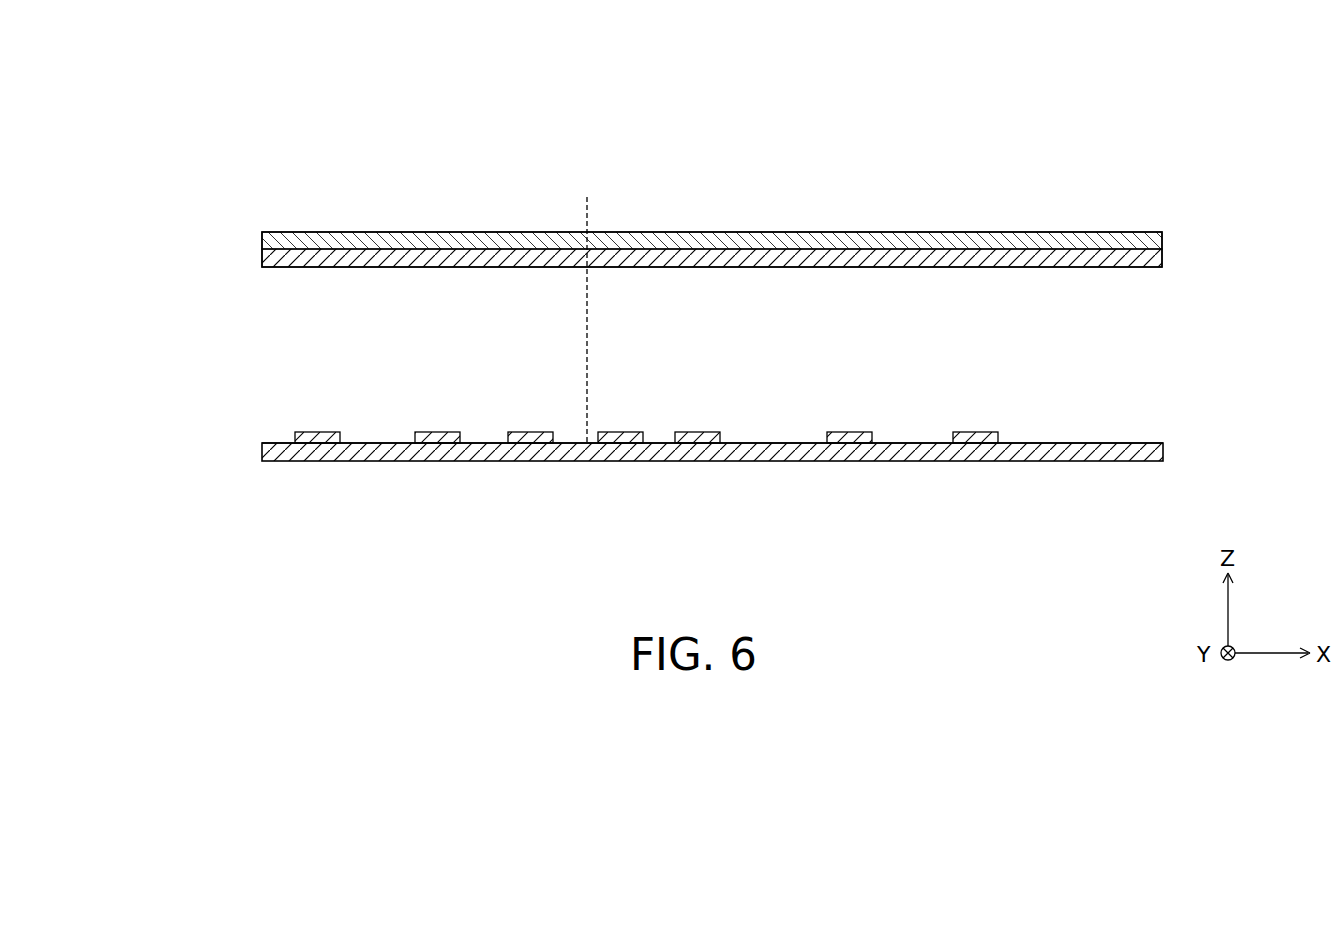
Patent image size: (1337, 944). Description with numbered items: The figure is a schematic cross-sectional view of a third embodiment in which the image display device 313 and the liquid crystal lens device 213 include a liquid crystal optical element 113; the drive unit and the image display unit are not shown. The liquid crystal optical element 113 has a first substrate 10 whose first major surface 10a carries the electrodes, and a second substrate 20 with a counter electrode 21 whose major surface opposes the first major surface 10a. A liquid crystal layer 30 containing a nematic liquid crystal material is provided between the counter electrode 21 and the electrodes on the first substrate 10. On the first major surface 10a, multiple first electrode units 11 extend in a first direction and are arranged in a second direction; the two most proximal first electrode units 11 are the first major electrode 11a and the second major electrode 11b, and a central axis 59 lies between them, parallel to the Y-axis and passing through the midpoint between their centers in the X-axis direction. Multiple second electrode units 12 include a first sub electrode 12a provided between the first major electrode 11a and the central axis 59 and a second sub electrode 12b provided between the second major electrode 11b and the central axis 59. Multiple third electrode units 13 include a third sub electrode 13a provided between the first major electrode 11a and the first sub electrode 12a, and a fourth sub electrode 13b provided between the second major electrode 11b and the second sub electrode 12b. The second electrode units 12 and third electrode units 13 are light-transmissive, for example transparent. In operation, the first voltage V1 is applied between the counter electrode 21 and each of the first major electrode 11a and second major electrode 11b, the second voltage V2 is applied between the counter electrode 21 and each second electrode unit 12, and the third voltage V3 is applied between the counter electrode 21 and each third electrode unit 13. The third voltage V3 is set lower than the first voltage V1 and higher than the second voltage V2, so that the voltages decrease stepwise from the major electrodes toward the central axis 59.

The first substrate 10 is at (1150, 452).
The first major surface 10a is at (1125, 442).
The first electrode units 11 is at (590, 481).
The first major electrode 11a is at (322, 437).
The second major electrode 11b is at (850, 437).
The second electrode units 12 is at (581, 500).
The first sub electrode 12a is at (527, 437).
The second sub electrode 12b is at (618, 437).
The third electrode units 13 is at (572, 500).
The third sub electrode 13a is at (437, 437).
The fourth sub electrode 13b is at (697, 437).
The second substrate 20 is at (1150, 243).
The counter electrode 21 is at (1150, 258).
The liquid crystal layer 30 is at (1165, 333).
The central axis 59 is at (586, 304).
The liquid crystal optical element 113 is at (1175, 185).
The liquid crystal lens device 213 is at (248, 221).
The image display device 313 is at (952, 138).
The first voltage V1 is at (585, 413).
The second voltage V2 is at (575, 413).
The third voltage V3 is at (566, 413).